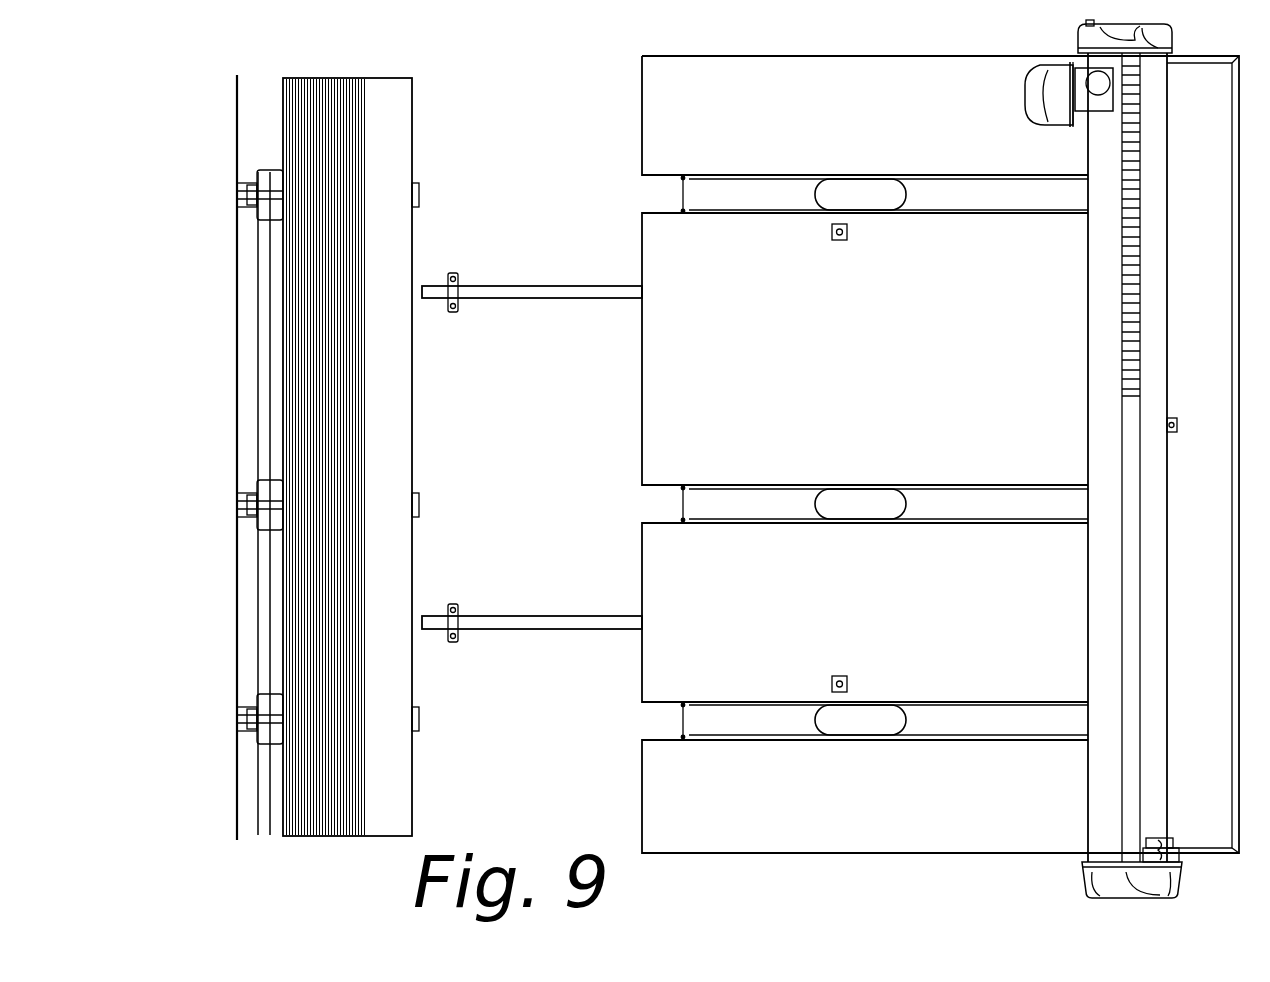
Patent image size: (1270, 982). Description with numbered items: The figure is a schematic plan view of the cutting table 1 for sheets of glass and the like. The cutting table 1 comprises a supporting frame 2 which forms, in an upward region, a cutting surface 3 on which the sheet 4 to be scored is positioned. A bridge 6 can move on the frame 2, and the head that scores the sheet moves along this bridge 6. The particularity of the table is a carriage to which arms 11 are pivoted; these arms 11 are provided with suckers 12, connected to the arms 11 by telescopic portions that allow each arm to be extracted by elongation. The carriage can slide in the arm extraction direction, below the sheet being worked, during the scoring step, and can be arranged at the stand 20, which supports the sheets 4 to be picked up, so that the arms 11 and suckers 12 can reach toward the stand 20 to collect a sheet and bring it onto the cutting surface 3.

The cutting table 1 is at (190, 115).
The supporting frame 2 is at (625, 92).
The stand 20 is at (404, 122).
The sheet 4 is at (352, 433).
The arms 11 is at (745, 192).
The suckers 12 is at (858, 193).
The bridge 6 is at (1152, 655).
The cutting surface 3 is at (878, 830).